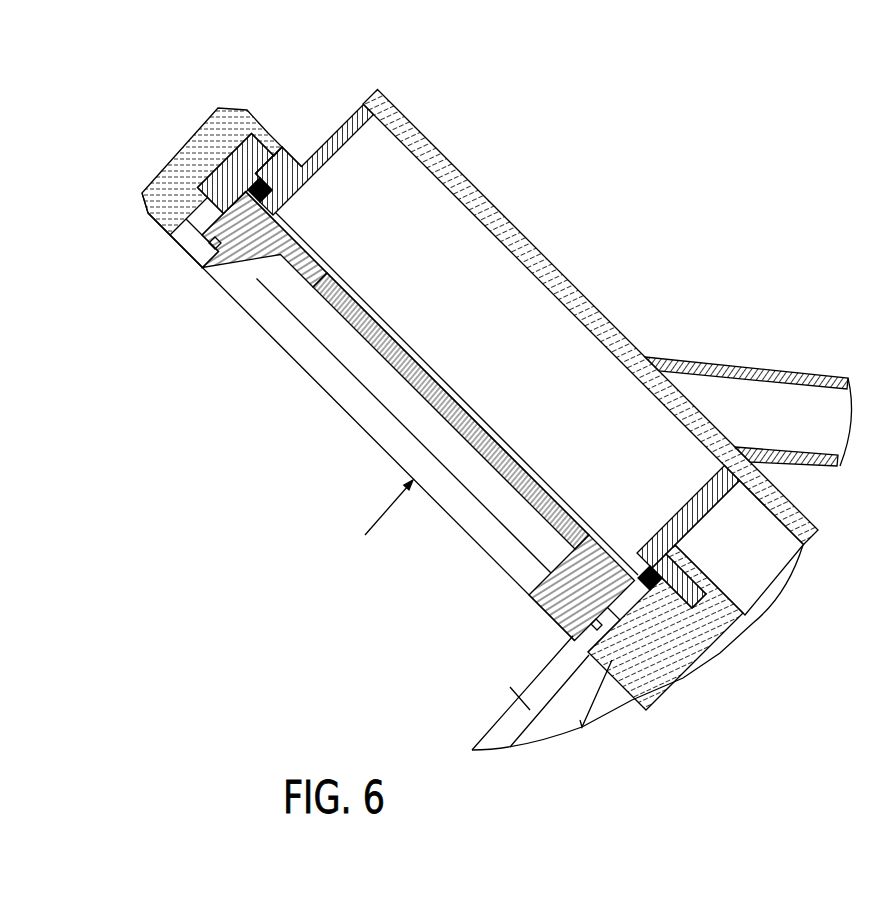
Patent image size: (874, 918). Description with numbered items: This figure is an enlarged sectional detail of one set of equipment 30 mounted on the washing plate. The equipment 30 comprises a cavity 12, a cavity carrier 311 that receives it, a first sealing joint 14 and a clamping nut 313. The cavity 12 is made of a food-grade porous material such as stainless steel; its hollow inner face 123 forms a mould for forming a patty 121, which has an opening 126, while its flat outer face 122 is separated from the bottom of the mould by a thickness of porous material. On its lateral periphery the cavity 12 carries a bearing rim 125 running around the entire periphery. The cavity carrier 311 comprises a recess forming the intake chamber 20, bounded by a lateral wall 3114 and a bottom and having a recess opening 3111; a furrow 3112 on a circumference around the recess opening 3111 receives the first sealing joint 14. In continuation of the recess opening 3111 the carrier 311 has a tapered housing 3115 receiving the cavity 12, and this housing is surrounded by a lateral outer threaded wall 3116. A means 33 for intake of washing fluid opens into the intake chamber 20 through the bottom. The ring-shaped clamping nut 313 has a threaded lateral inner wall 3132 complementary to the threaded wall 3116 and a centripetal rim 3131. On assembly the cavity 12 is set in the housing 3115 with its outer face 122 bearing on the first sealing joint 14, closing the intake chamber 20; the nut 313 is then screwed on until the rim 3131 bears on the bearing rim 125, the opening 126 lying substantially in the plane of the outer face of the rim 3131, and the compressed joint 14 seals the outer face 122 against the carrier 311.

The cavity 12 is at (247, 282).
The mould for forming a patty 121 is at (368, 412).
The outer face 122 is at (532, 448).
The inner face 123 is at (487, 465).
The bearing rim 125 is at (592, 626).
The opening 126 is at (373, 519).
The first sealing joint 14 is at (290, 143).
The intake chamber 20 is at (468, 295).
The equipment 30 is at (611, 233).
The cavity carrier 311 is at (352, 110).
The recess opening 3111 is at (627, 572).
The furrow 3112 is at (658, 560).
The lateral wall 3114 is at (327, 163).
The housing 3115 is at (170, 219).
The lateral outer threaded wall 3116 is at (705, 640).
The clamping nut 313 is at (188, 165).
The centripetal rim 3131 is at (207, 265).
The lateral inner wall 3132 is at (268, 170).
The means for intake of the fluid 33 is at (795, 423).